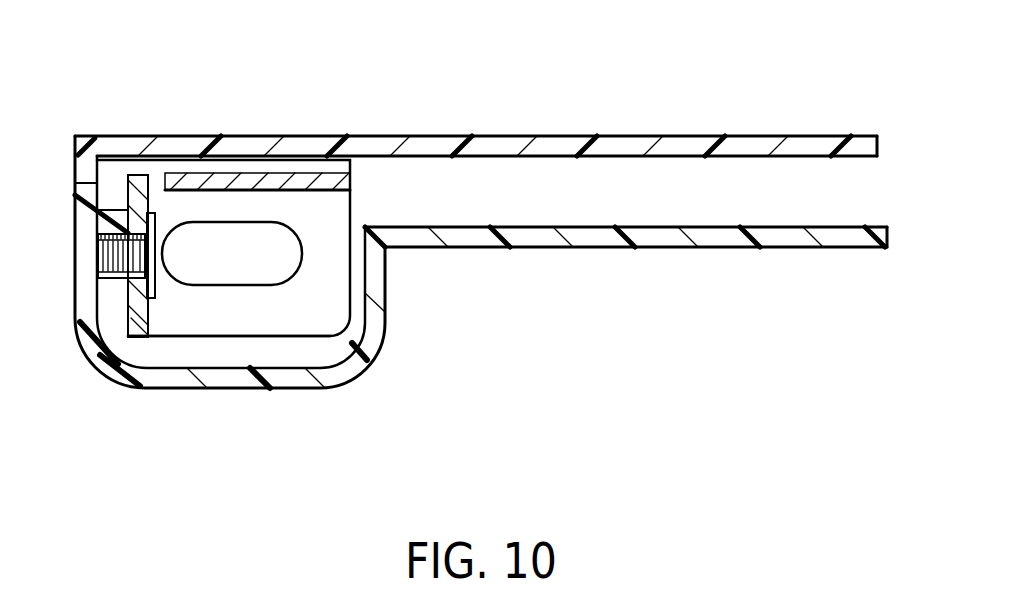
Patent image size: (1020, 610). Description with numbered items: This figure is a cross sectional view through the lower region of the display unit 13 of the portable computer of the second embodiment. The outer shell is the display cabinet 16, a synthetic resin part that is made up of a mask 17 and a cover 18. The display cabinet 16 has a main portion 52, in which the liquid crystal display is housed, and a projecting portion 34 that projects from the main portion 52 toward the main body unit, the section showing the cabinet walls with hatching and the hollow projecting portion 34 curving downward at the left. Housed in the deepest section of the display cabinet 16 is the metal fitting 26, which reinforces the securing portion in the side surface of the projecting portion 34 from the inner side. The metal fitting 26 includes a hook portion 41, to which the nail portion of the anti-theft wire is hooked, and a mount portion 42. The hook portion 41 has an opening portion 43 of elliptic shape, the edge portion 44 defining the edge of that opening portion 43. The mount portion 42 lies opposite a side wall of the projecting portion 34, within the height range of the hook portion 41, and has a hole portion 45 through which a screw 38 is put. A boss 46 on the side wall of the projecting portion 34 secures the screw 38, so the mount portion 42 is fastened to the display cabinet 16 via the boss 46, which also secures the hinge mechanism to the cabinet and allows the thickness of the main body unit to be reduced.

The display unit 13 is at (561, 102).
The display cabinet 16 is at (713, 136).
The mask 17 is at (849, 248).
The cover 18 is at (887, 228).
The metal fitting 26 is at (258, 172).
The projecting portion 34 is at (375, 343).
The screw 38 is at (158, 292).
The hook portion 41 is at (330, 195).
The mount portion 42 is at (142, 173).
The opening portion 43 is at (272, 290).
The edge portion 44 is at (225, 318).
The hole portion 45 is at (80, 258).
The boss 46 is at (110, 208).
The main portion 52 is at (540, 248).